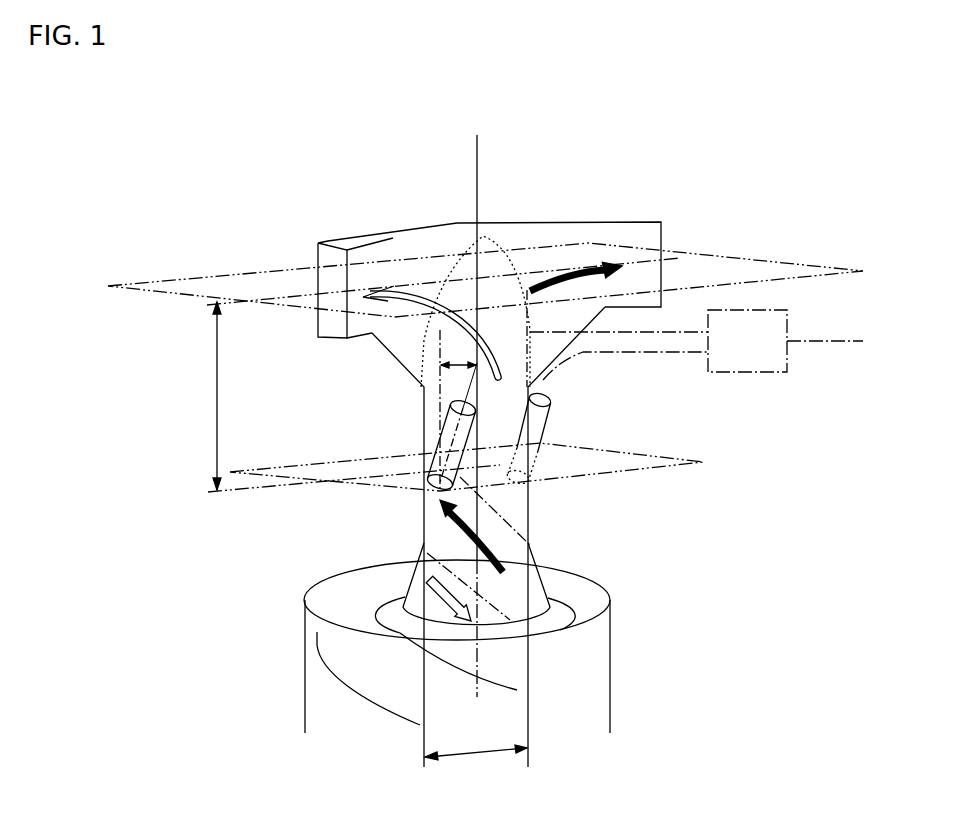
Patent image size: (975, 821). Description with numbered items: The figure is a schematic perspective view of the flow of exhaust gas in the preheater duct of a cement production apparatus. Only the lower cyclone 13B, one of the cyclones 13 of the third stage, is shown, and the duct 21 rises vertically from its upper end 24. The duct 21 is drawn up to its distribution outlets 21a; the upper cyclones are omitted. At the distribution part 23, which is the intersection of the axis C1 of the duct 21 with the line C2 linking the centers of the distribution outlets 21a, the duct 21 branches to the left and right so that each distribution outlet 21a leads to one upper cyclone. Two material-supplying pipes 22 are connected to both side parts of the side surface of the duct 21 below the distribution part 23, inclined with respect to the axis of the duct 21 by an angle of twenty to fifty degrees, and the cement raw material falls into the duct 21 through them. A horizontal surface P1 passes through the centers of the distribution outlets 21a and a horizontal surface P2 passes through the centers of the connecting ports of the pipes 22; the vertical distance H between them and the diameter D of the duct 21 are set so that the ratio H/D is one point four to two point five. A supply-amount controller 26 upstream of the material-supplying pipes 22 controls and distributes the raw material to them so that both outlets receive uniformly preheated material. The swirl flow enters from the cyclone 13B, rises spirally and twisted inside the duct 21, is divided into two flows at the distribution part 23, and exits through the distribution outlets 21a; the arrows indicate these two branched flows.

The cyclone 13 is at (531, 635).
The cyclone of the third stage 13B is at (531, 635).
The duct 21 is at (520, 525).
The distribution outlet 21a is at (328, 280).
The material-supplying pipe 22 is at (452, 437).
The distribution part 23 is at (480, 278).
The upper end 24 is at (342, 593).
The supply-amount controller 26 is at (760, 367).
The axis of the duct C1 is at (477, 172).
The line linking centers of the distribution outlets C2 is at (300, 297).
The horizontal surface passing through centers of the distribution outlets P1 is at (747, 265).
The horizontal surface passing through centers of the connecting ports P2 is at (643, 457).
The vertical distance H is at (210, 396).
The diameter of the duct D is at (476, 741).